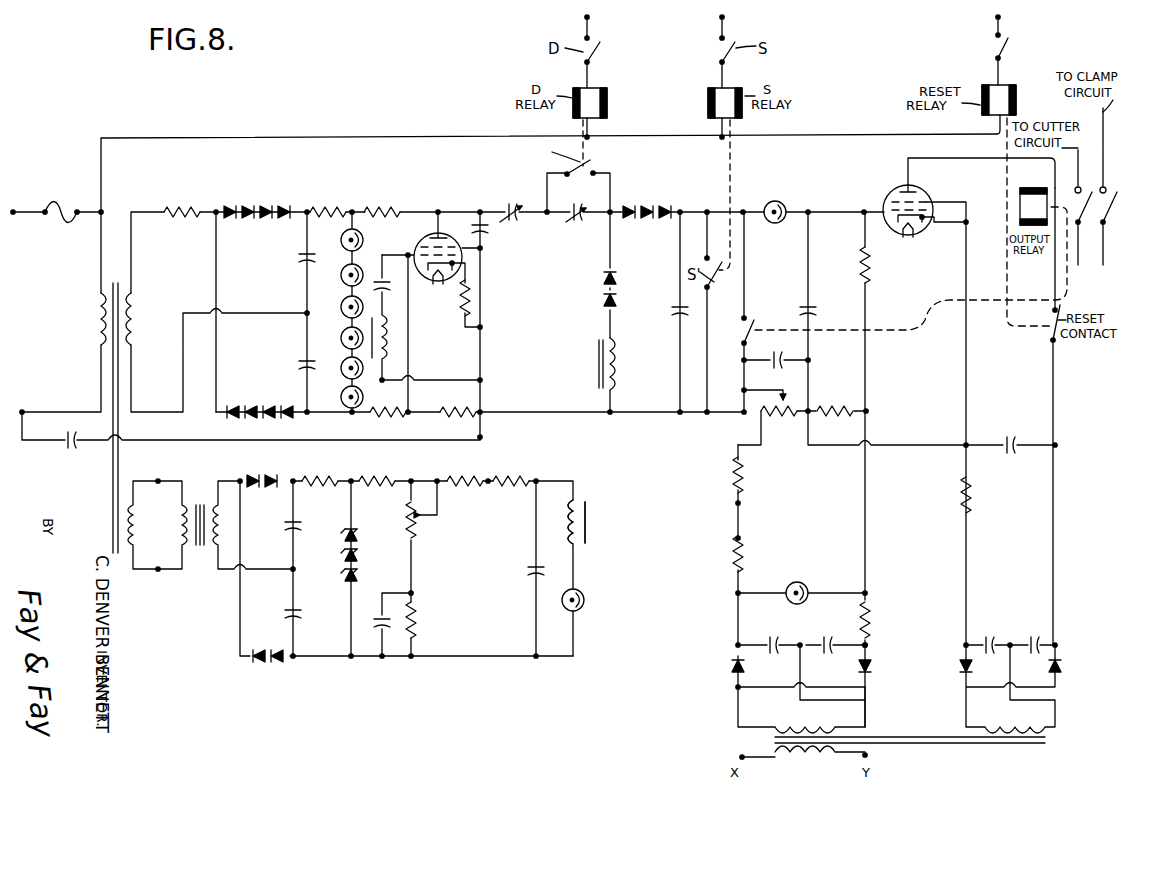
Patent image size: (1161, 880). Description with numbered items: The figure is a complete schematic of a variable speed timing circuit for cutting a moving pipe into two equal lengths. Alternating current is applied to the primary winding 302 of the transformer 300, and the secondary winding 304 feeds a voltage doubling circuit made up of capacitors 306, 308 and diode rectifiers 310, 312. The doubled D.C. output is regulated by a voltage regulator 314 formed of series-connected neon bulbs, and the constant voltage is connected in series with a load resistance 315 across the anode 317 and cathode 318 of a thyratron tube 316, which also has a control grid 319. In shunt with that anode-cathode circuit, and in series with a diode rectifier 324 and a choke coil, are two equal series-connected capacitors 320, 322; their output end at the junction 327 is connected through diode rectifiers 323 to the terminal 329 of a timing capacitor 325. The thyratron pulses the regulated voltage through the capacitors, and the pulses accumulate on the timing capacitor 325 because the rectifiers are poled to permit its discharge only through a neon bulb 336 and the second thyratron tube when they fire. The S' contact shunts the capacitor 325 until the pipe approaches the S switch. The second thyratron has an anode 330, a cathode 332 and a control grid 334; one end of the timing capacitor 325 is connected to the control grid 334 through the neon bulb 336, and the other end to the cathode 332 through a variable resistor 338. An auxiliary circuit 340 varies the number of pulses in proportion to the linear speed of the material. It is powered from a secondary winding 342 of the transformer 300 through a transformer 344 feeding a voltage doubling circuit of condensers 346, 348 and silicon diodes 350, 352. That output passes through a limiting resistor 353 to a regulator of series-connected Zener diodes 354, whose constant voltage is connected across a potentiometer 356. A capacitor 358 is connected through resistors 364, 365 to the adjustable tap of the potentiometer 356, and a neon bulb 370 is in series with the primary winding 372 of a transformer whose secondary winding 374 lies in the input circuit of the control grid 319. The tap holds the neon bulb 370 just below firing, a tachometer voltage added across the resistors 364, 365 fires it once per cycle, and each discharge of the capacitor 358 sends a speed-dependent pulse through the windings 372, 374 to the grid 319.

The transformer 300 is at (111, 307).
The primary winding 302 is at (100, 320).
The secondary winding 304 is at (133, 314).
The capacitor 306 is at (298, 259).
The capacitor 308 is at (298, 365).
The diode rectifiers 310 is at (271, 206).
The diode rectifiers 312 is at (290, 407).
The voltage regulator 314 is at (337, 308).
The load resistance 315 is at (385, 206).
The thyratron tube 316 is at (438, 299).
The anode 317 is at (430, 230).
The cathode 318 is at (423, 250).
The control grid 319 is at (408, 255).
The capacitor 320 is at (511, 224).
The capacitor 322 is at (576, 221).
The diode rectifiers 323 is at (645, 206).
The diode rectifier 324 is at (603, 290).
The timing capacitor 325 is at (674, 310).
The junction 327 is at (598, 185).
The terminal 329 is at (683, 206).
The anode 330 is at (920, 164).
The cathode 332 is at (930, 220).
The control grid 334 is at (944, 401).
The neon bulb 336 is at (780, 190).
The variable resistor 338 is at (788, 421).
The auxiliary circuit 340 is at (464, 580).
The secondary winding 342 is at (135, 540).
The transformer 344 is at (202, 498).
The condenser 346 is at (286, 524).
The condenser 348 is at (297, 615).
The silicon diodes 350 is at (265, 660).
The silicon diodes 352 is at (267, 478).
The limiting resistor 353 is at (319, 478).
The Zener diodes 354 is at (344, 550).
The potentiometer 356 is at (428, 516).
The capacitor 358 is at (528, 570).
The resistor 364 is at (463, 478).
The resistor 365 is at (513, 478).
The neon bulb 370 is at (586, 599).
The primary winding 372 is at (578, 506).
The secondary winding 374 is at (391, 344).